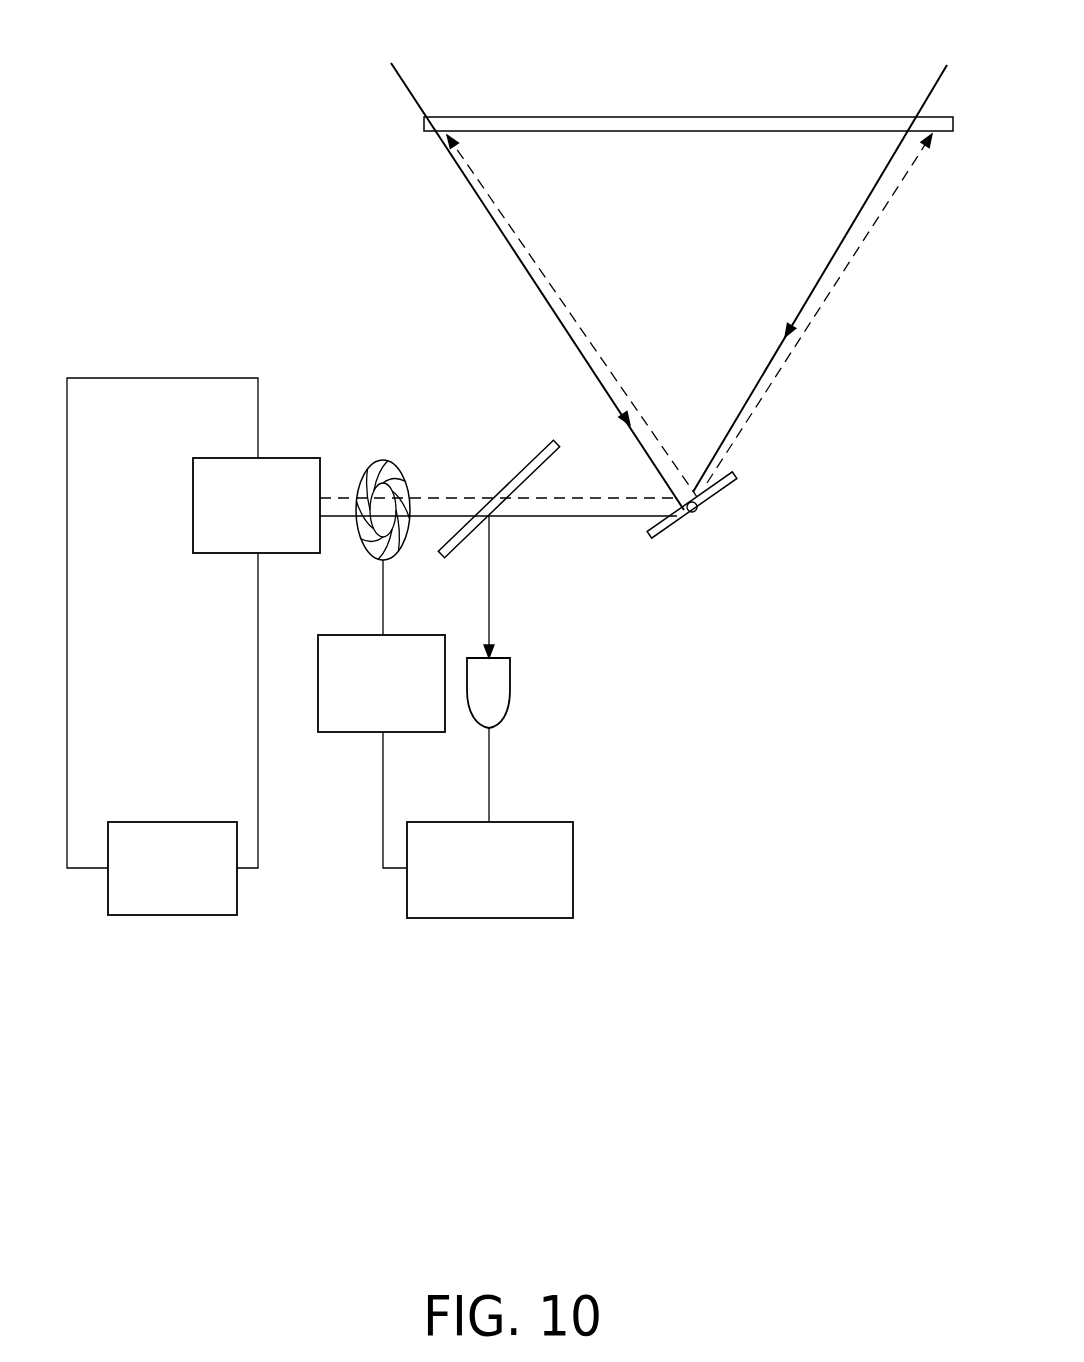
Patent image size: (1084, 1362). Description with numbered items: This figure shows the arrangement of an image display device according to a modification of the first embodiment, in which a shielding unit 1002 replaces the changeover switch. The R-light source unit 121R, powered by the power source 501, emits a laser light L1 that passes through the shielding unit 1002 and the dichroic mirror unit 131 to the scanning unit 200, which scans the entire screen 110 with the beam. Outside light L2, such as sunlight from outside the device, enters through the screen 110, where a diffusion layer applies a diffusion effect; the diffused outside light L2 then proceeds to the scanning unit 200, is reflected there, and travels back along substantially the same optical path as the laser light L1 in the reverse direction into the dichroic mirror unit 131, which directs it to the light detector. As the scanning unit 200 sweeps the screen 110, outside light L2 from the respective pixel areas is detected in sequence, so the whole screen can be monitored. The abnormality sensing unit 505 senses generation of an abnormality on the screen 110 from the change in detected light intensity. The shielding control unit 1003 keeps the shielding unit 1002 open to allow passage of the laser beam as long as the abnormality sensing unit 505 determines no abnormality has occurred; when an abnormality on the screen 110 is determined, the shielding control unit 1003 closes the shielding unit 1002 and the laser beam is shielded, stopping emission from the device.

The screen 110 is at (507, 117).
The outside light L2 is at (405, 80).
The laser light L1 is at (523, 237).
The scanning unit 200 is at (725, 495).
The R-light source unit 121R is at (305, 457).
The shielding unit 1002 is at (400, 460).
The dichroic mirror unit 131 is at (532, 458).
The shielding control unit 1003 is at (440, 635).
The power source 501 is at (202, 820).
The abnormality sensing unit 505 is at (575, 865).